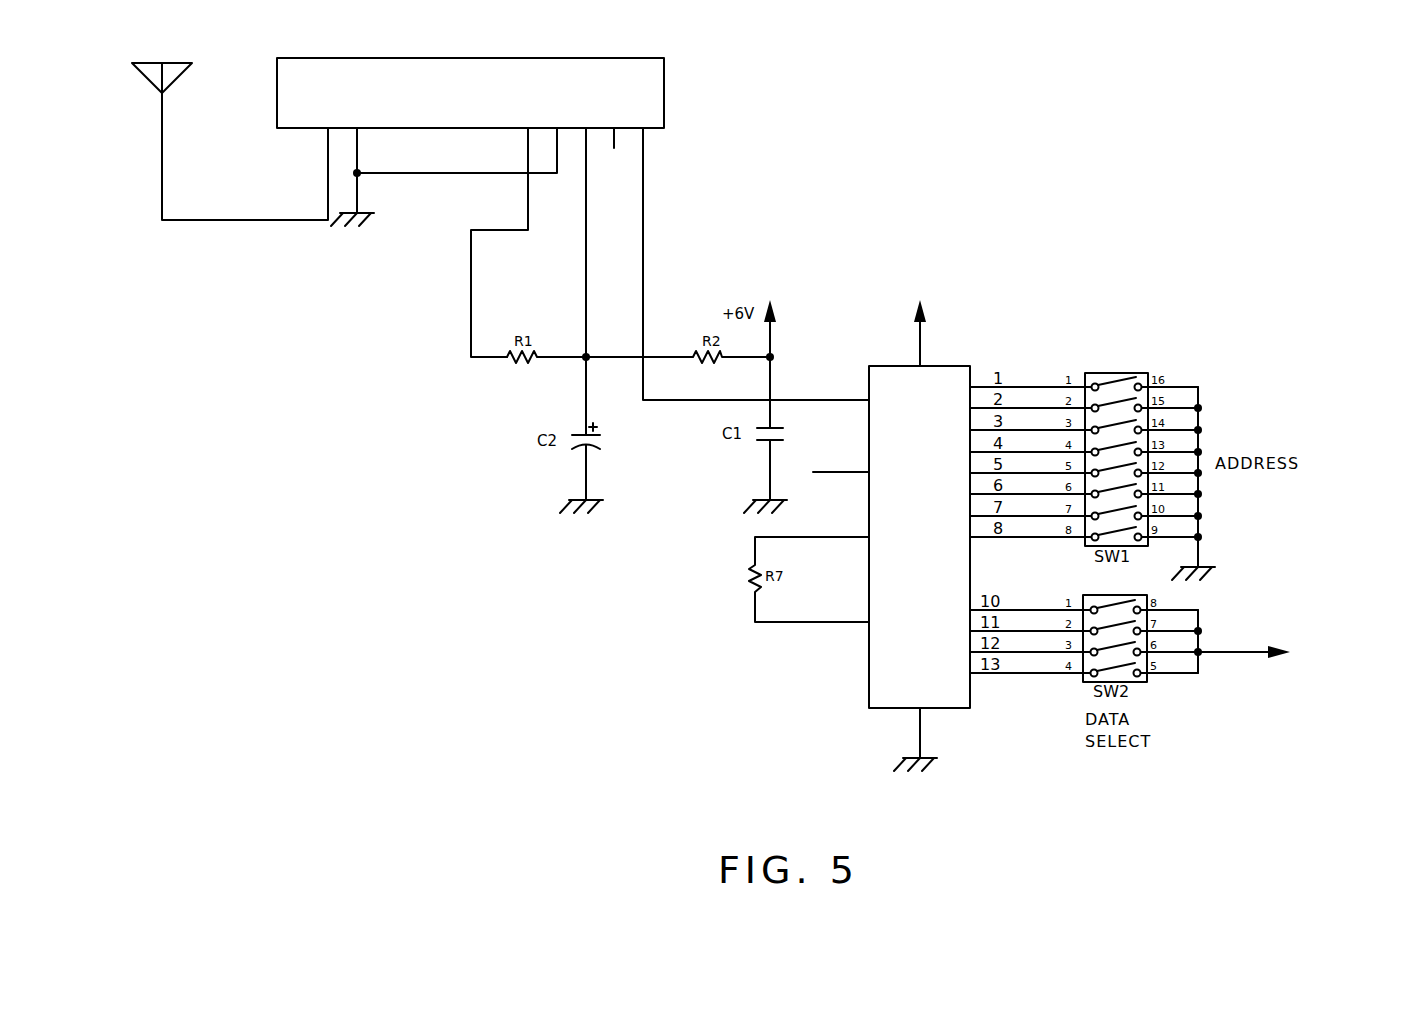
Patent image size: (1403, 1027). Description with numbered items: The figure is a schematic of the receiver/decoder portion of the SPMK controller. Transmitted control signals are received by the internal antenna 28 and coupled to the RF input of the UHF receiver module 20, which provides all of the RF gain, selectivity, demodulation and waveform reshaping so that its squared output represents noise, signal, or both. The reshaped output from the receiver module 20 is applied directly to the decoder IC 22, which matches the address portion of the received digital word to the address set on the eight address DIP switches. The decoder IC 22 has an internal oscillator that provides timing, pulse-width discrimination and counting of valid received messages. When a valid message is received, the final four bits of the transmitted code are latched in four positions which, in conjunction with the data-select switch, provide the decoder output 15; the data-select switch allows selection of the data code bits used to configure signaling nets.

The receiver module 20 is at (672, 93).
The decoder IC 22 is at (862, 658).
The antenna 28 is at (125, 93).
The decoder output 15 is at (1292, 646).